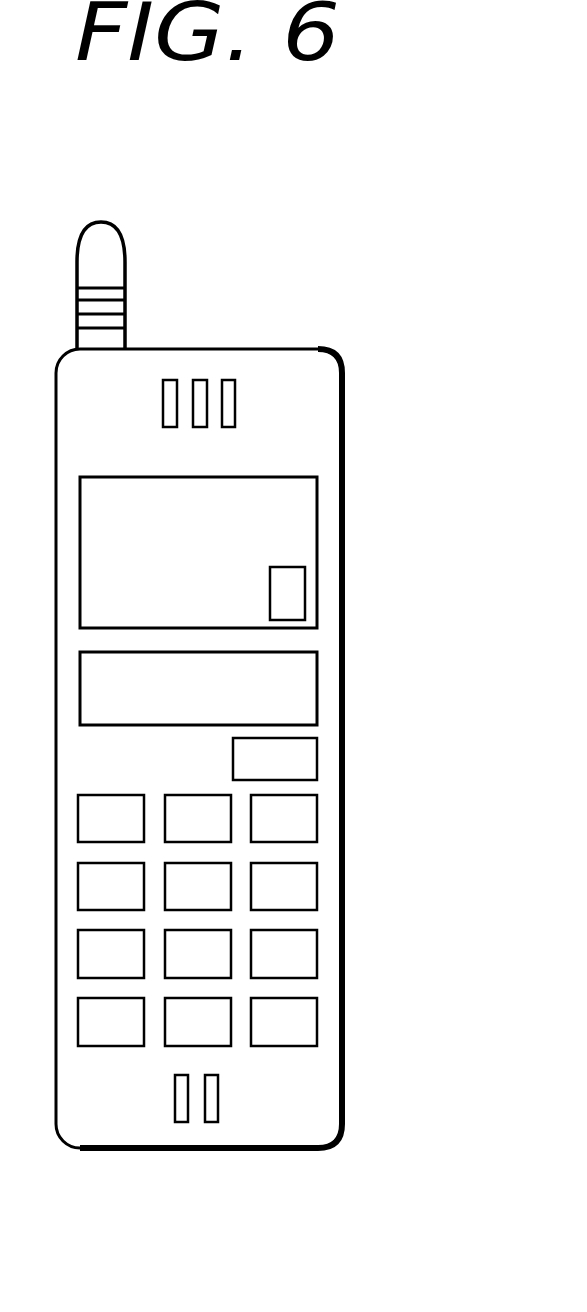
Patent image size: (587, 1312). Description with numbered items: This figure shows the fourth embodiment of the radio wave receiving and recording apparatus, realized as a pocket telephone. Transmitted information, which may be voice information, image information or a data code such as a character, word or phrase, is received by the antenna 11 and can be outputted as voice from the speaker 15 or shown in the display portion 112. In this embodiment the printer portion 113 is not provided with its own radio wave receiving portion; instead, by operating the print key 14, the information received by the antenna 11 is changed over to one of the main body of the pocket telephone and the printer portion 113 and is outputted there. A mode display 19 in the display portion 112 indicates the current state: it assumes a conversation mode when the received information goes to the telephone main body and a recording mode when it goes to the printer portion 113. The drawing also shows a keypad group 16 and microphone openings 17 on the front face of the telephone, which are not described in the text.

The antenna 11 is at (123, 250).
The speaker 15 is at (228, 380).
The display portion 112 is at (317, 540).
The mode display 19 is at (305, 595).
The printer portion 113 is at (317, 690).
The print key 14 is at (317, 760).
The key input section 16 is at (367, 1043).
The microphone 17 is at (218, 1090).